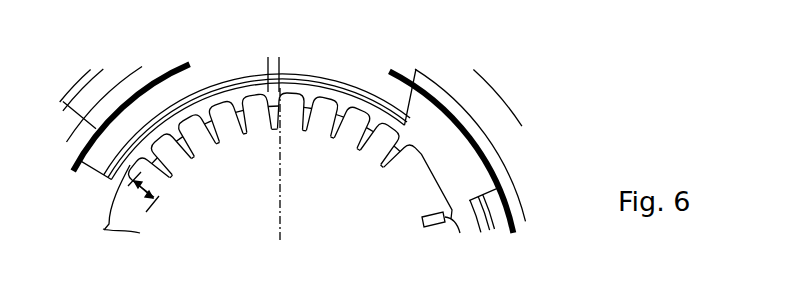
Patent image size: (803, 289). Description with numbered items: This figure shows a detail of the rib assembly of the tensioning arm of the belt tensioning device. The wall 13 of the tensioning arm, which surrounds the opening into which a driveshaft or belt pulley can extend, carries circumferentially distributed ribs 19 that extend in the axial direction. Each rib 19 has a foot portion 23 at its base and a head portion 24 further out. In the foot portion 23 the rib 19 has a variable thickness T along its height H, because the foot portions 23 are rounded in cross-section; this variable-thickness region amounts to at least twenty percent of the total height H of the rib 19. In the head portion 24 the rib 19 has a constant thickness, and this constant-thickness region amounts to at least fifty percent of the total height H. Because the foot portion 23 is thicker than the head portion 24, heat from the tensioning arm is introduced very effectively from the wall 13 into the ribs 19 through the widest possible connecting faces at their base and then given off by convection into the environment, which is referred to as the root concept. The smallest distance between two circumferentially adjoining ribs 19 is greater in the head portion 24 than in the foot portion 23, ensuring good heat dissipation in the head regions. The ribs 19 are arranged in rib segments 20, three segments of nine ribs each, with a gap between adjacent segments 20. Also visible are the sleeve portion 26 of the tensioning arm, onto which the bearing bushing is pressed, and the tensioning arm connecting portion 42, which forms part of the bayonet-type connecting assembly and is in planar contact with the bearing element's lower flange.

The wall 13 is at (433, 180).
The ribs 19 is at (192, 168).
The rib segments 20 is at (261, 170).
The foot portion 23 is at (350, 103).
The head portion 24 is at (306, 126).
The sleeve portion 26 is at (378, 107).
The tensioning arm connecting portion 42 is at (470, 163).
The thickness T is at (273, 135).
The height H is at (139, 194).